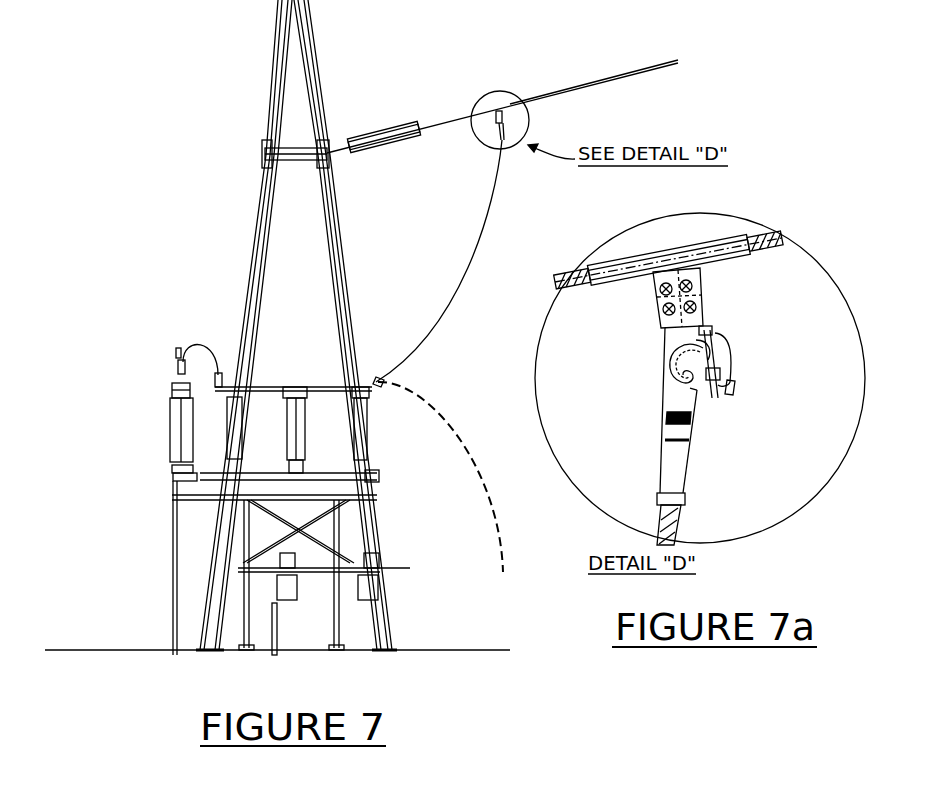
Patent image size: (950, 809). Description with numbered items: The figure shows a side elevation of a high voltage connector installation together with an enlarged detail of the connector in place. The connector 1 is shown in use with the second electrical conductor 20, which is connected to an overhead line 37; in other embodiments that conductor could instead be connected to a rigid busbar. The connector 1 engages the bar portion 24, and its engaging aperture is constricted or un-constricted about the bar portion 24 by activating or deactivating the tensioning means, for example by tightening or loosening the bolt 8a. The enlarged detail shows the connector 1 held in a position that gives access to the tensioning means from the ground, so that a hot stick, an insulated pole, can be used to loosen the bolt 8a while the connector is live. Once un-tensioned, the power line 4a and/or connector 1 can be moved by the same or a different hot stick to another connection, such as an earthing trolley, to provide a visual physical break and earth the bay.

In FIG. 7, the connector 1 is at (504, 116).
In FIG. 7A, the connector 1 is at (676, 377).
In FIG. 7, the overhead line 37 is at (666, 68).
In FIG. 7A, the overhead line 37 is at (772, 252).
In FIG. 7, the power line 4a is at (481, 212).
In FIG. 7A, the second electrical conductor 20 is at (703, 297).
In FIG. 7A, the bar portion 24 is at (688, 348).
In FIG. 7A, the bolt 8a is at (722, 392).